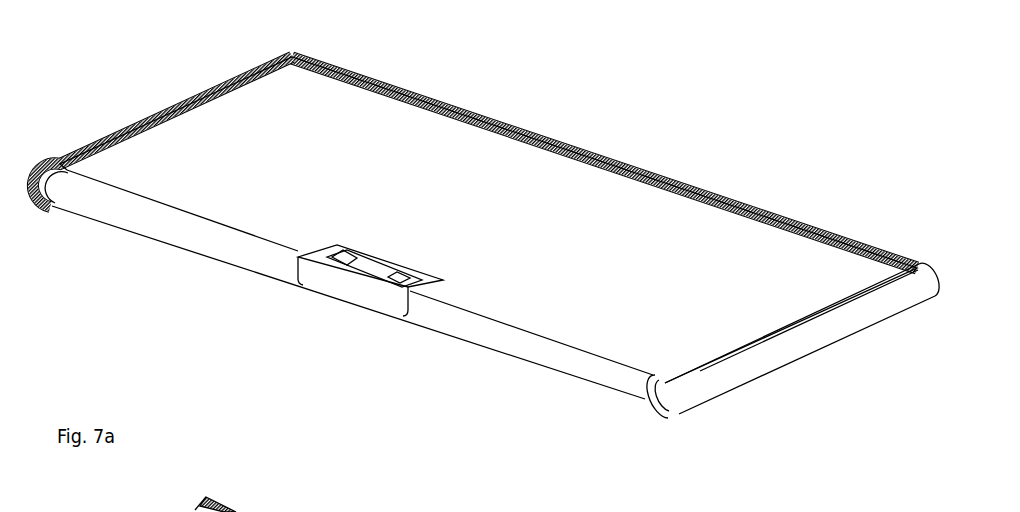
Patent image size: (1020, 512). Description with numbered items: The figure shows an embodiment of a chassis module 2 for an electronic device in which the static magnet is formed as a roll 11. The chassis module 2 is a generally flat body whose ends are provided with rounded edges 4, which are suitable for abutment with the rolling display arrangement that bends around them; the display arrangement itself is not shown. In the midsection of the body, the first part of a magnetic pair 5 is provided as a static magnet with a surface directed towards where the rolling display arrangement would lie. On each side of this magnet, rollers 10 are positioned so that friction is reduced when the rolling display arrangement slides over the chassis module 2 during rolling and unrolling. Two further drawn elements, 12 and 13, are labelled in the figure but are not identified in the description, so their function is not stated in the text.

The chassis module 2 is at (522, 180).
The rounded edge 4 is at (177, 226).
The first part of a magnetic pair 5 is at (366, 331).
The rollers 10 is at (343, 260).
The roll 11 is at (432, 283).
The roller 12 is at (146, 102).
The frame edge 13 is at (452, 108).